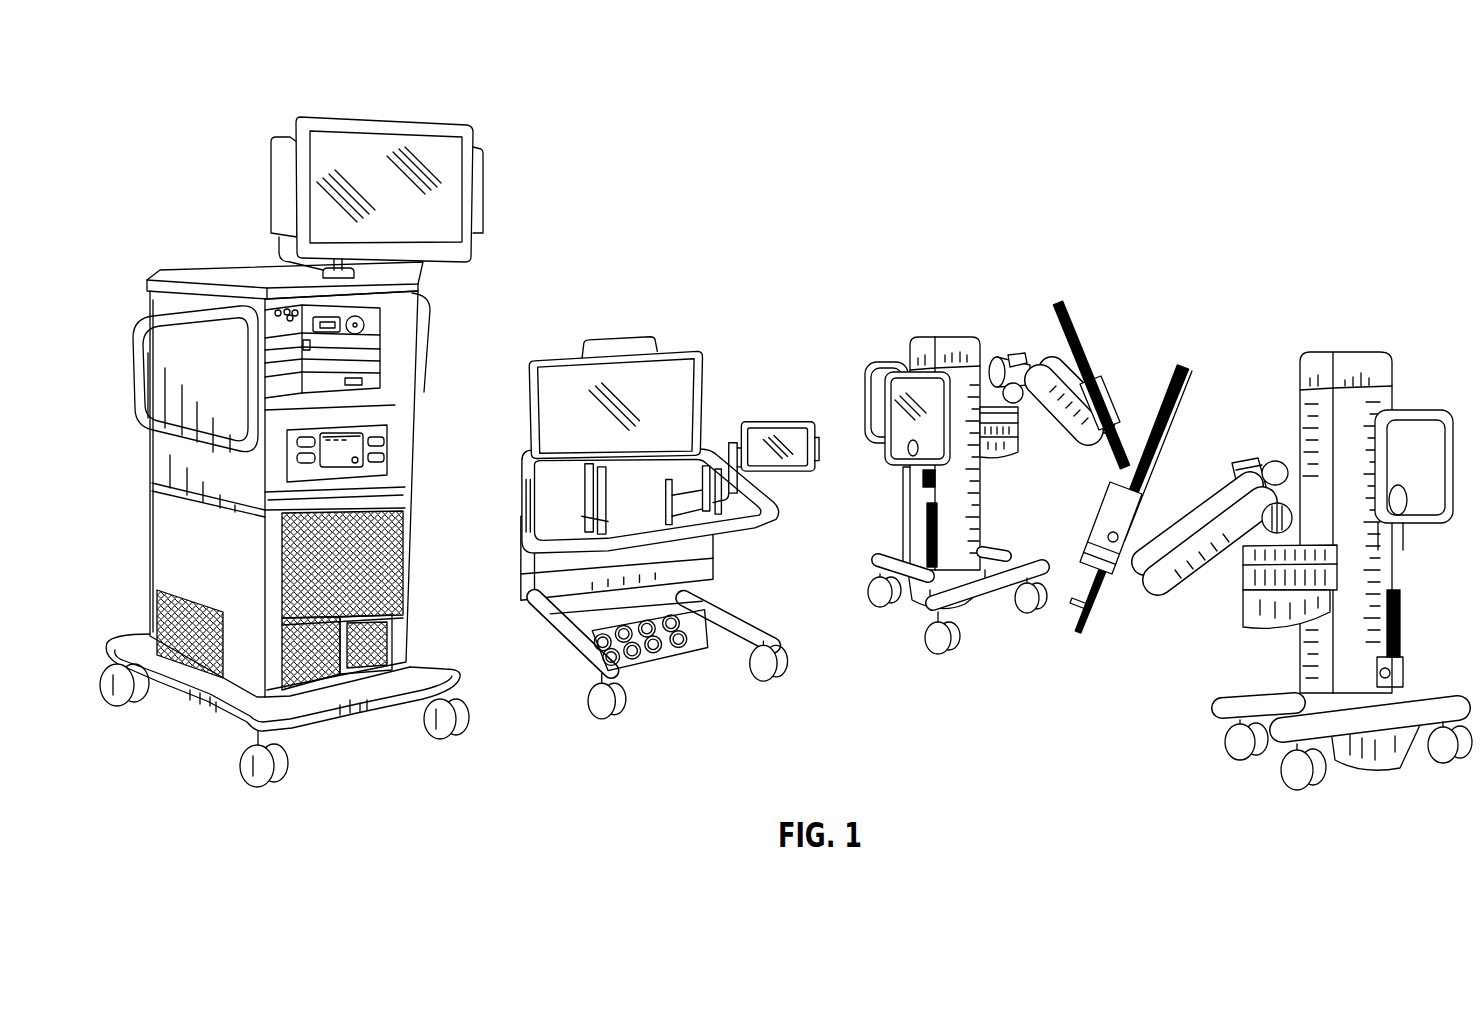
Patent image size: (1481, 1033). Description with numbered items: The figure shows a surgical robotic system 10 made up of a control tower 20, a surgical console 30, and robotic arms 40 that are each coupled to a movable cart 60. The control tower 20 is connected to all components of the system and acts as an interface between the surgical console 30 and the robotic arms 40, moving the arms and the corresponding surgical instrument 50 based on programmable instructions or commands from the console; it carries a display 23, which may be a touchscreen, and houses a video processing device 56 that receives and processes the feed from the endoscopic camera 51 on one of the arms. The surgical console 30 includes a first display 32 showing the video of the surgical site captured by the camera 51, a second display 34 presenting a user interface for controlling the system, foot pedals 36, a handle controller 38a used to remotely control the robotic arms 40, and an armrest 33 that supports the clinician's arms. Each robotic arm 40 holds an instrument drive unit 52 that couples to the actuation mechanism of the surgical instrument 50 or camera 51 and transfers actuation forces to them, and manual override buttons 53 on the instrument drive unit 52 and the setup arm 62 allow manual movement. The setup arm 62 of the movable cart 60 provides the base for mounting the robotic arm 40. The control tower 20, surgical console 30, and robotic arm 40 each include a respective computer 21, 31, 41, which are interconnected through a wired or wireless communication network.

The surgical robotic system 10 is at (197, 104).
The control tower 20 is at (177, 537).
The computer 21 is at (397, 550).
The display 23 is at (467, 166).
The surgical console 30 is at (705, 405).
The computer 31 is at (527, 553).
The first display 32 is at (660, 348).
The armrest 33 is at (730, 527).
The second display 34 is at (762, 413).
The foot pedals 36 is at (645, 648).
The handle controller 38a is at (518, 443).
The robotic arm 40 is at (1042, 360).
The computer 41 is at (967, 527).
The surgical instrument 50 is at (1090, 614).
The endoscopic camera 51 is at (1125, 462).
The instrument drive unit 52 is at (1110, 508).
The manual override buttons 53 is at (1107, 543).
The video processing device 56 is at (368, 327).
The movable cart 60 is at (953, 340).
The setup arm 62 is at (1310, 665).